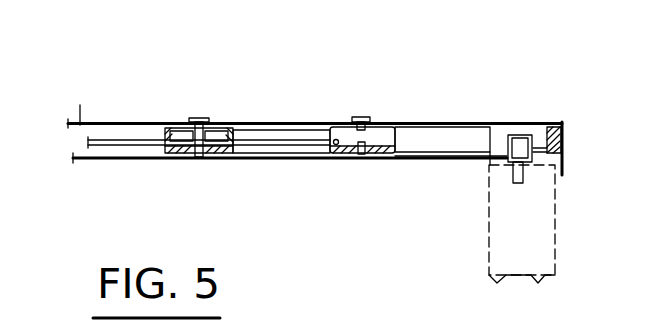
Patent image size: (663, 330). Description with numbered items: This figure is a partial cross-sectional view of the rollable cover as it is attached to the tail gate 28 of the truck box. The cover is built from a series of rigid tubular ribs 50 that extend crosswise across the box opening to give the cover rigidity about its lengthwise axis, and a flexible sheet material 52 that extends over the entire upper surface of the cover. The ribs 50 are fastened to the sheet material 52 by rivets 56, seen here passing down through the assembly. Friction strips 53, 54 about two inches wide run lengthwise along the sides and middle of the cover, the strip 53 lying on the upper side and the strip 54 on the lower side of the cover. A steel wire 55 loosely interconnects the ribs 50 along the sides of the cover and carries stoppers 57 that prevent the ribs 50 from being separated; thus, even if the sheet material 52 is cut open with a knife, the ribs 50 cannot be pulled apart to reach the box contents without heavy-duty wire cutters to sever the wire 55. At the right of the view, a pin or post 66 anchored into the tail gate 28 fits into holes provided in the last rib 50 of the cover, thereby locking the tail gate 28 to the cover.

The tail gate 28 is at (527, 237).
The rigid tubular ribs 50 is at (403, 122).
The flexible sheet material 52 is at (80, 105).
The friction strip 53 is at (130, 122).
The friction strip 54 is at (331, 158).
The steel wire 55 is at (266, 134).
The rivets 56 is at (200, 117).
The stoppers 57 is at (190, 147).
The pin or post 66 is at (528, 172).